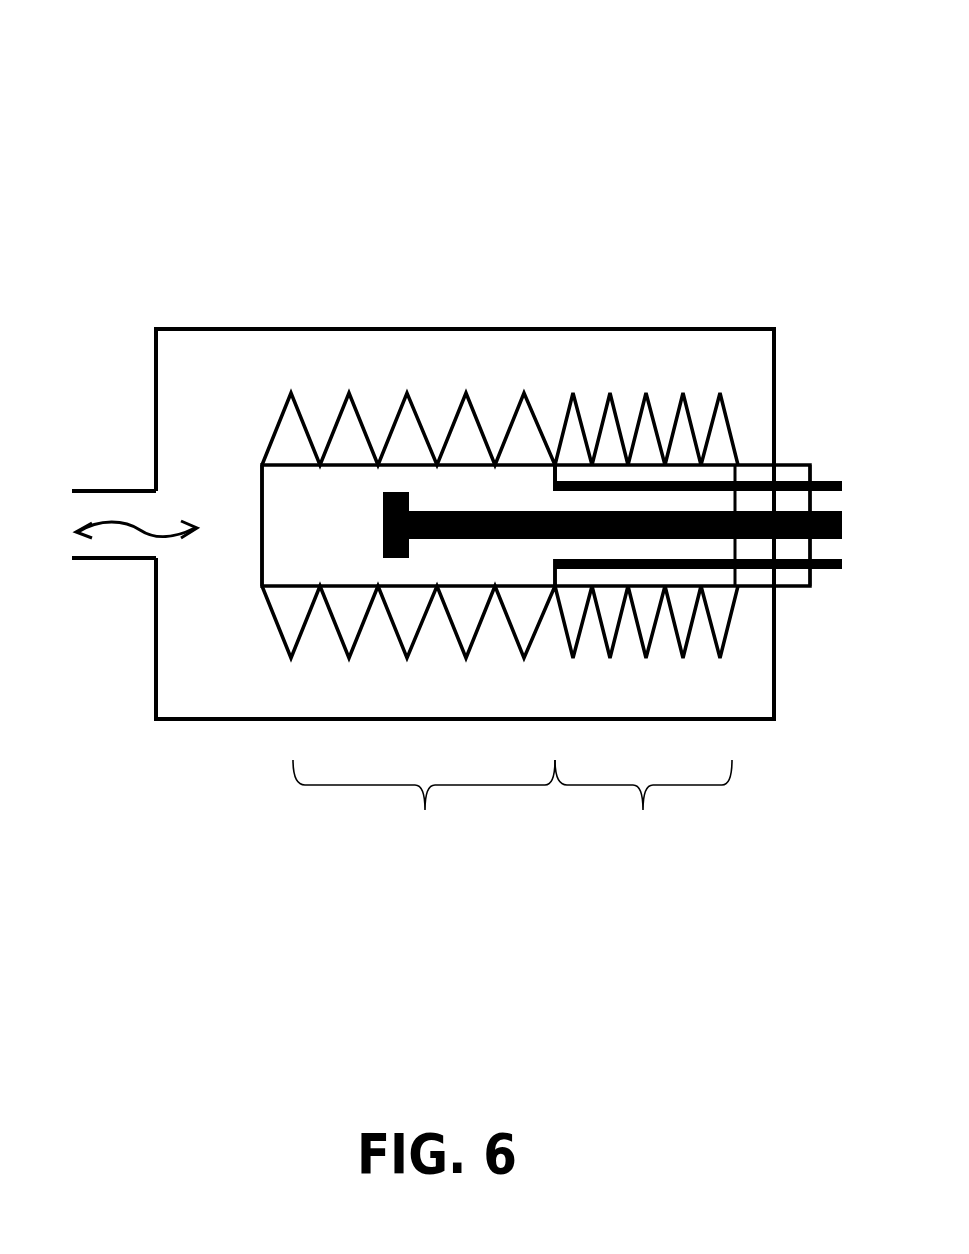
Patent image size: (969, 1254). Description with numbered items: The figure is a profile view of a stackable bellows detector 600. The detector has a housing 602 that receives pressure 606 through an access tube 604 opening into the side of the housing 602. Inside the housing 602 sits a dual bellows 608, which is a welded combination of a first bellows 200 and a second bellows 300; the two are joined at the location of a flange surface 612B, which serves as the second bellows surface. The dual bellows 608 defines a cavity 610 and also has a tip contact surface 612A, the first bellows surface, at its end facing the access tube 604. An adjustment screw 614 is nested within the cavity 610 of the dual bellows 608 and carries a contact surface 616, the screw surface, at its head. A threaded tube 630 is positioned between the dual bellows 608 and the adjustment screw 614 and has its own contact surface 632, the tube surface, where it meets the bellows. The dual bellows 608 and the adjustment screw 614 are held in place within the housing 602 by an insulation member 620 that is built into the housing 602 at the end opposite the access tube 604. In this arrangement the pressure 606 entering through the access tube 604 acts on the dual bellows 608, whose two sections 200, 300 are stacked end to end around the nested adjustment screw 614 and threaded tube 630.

The stackable bellows detector 600 is at (562, 162).
The housing 602 is at (200, 328).
The access tube 604 is at (112, 487).
The pressure 606 is at (128, 525).
The dual bellows 608 is at (262, 408).
The cavity 610 is at (278, 537).
The tip contact surface 612A is at (260, 527).
The flange surface 612B is at (557, 578).
The adjustment screw 614 is at (470, 538).
The contact surface 616 is at (377, 528).
The insulation member 620 is at (787, 573).
The threaded tube 630 is at (786, 480).
The contact surface 632 is at (562, 477).
The bellows 200 is at (424, 804).
The bellows 300 is at (643, 804).